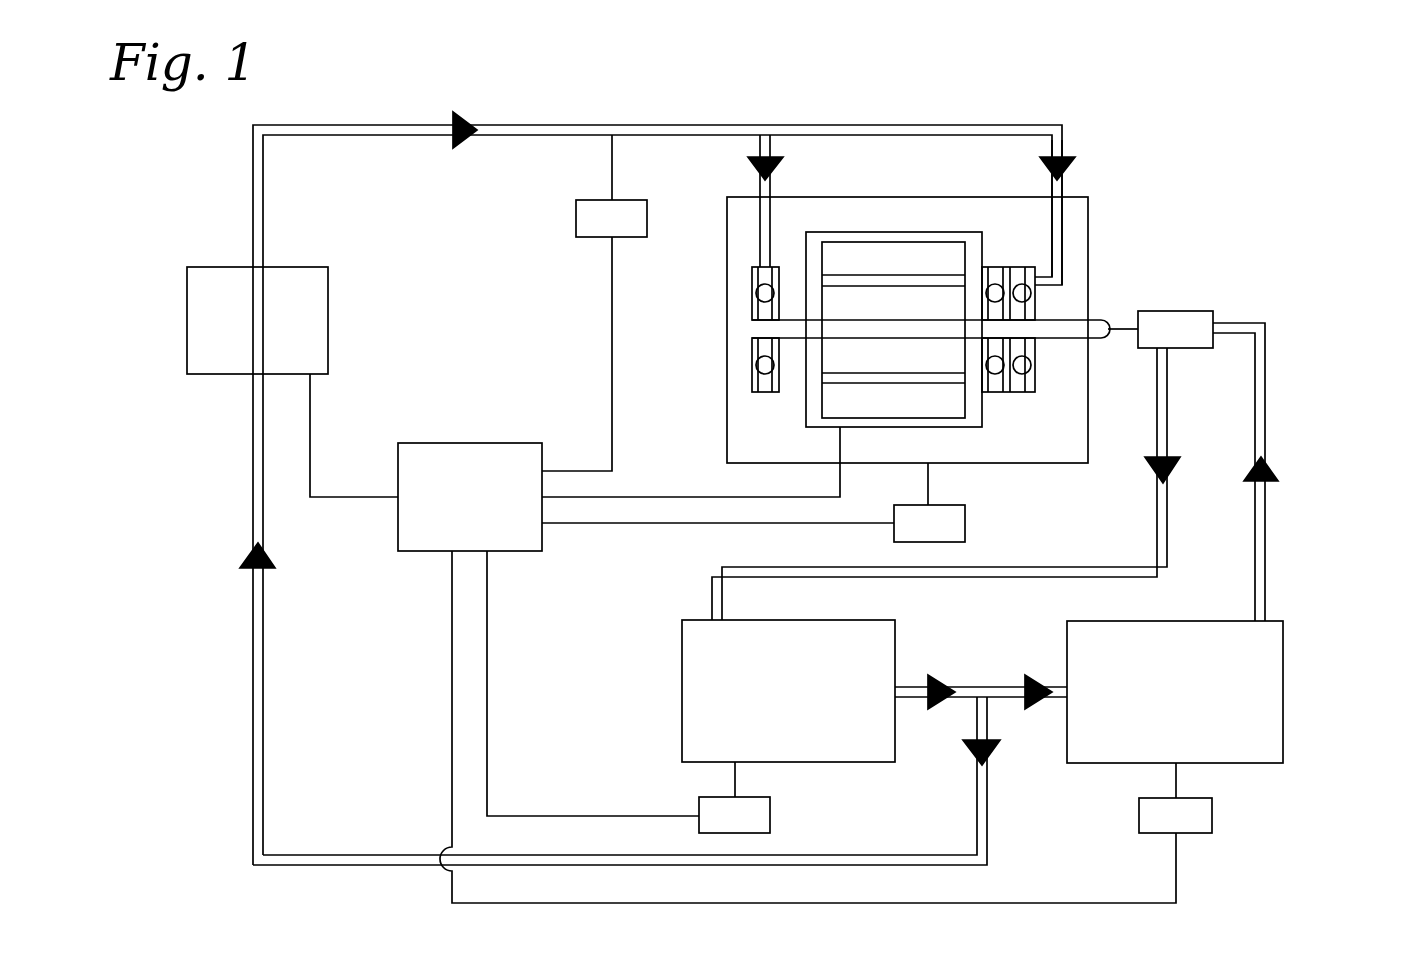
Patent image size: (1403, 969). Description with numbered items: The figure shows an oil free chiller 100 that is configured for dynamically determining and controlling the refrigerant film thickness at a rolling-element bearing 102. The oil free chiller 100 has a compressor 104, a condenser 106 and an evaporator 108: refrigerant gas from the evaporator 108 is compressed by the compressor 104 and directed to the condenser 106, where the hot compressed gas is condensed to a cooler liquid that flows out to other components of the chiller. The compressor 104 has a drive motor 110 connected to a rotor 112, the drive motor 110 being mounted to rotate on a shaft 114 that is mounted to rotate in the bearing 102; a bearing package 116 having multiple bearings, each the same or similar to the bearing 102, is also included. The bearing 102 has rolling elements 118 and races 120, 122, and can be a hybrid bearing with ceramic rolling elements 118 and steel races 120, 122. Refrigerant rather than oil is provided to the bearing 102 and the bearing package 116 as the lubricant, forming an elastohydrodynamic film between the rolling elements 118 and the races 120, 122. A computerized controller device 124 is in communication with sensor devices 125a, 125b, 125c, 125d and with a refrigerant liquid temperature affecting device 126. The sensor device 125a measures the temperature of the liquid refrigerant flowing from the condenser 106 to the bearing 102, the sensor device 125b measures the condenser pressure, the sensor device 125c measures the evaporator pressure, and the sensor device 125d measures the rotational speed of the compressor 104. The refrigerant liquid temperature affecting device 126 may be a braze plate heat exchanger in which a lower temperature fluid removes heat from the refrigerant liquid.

The oil free chiller 100 is at (1272, 132).
The rolling-element bearing 102 is at (753, 280).
The compressor 104 is at (1078, 192).
The condenser 106 is at (688, 620).
The evaporator 108 is at (1255, 765).
The drive motor 110 is at (848, 238).
The rotor 112 is at (890, 298).
The shaft 114 is at (1098, 318).
The bearing package 116 is at (1040, 307).
The rolling elements 118 is at (757, 353).
The race 120 is at (757, 393).
The race 122 is at (773, 393).
The computerized controller device 124 is at (492, 443).
The sensor device 125a is at (588, 200).
The sensor device 125b is at (708, 797).
The sensor device 125c is at (1200, 835).
The sensor device 125d is at (955, 505).
The refrigerant liquid temperature affecting device 126 is at (308, 268).